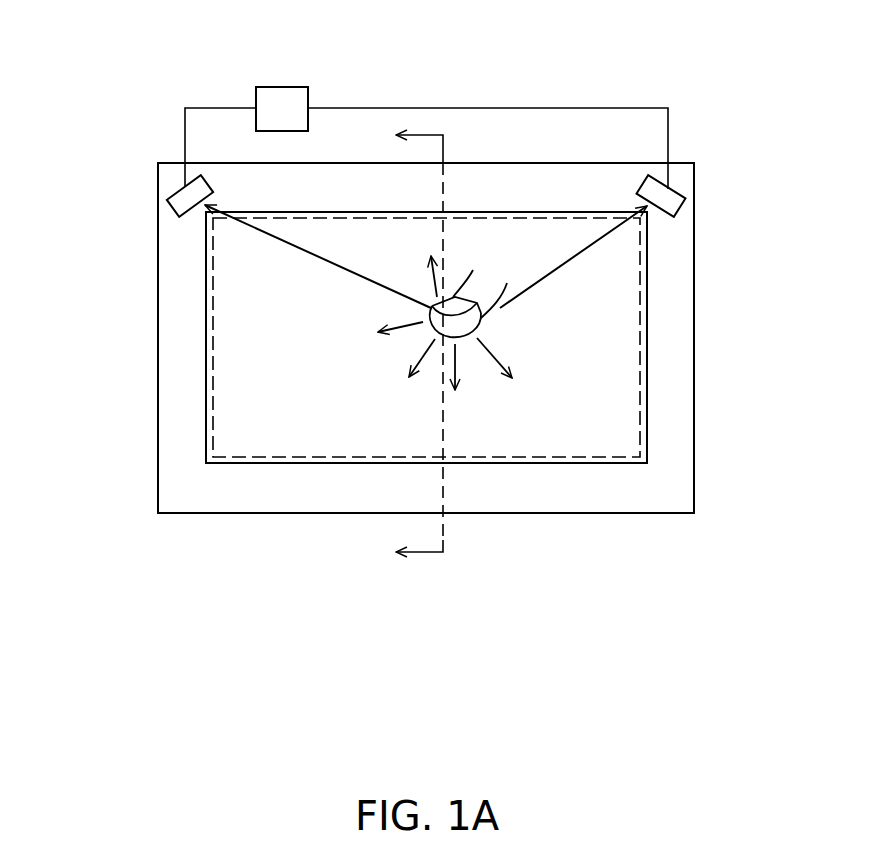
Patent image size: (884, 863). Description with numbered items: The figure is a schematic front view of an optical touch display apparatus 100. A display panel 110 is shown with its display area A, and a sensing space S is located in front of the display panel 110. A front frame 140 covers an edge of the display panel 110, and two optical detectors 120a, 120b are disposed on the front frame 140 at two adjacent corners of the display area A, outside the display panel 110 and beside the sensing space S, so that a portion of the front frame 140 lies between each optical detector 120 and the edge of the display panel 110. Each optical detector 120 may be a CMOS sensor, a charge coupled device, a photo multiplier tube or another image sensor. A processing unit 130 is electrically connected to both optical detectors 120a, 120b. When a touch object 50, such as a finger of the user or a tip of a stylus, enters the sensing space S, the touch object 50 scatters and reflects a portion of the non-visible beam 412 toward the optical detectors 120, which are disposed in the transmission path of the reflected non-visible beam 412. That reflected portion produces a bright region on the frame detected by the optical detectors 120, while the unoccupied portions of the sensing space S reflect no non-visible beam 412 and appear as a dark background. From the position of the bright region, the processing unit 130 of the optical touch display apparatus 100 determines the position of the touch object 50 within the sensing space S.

The optical touch display apparatus 100 is at (773, 599).
The display panel 110 is at (270, 418).
The optical detector 120 is at (427, 202).
The optical detector 120a is at (178, 202).
The optical detector 120b is at (675, 195).
The processing unit 130 is at (288, 87).
The front frame 140 is at (678, 422).
The non-visible beam 412 is at (290, 244).
The touch object 50 is at (482, 318).
The sensing space S is at (640, 260).
The display area A is at (543, 463).